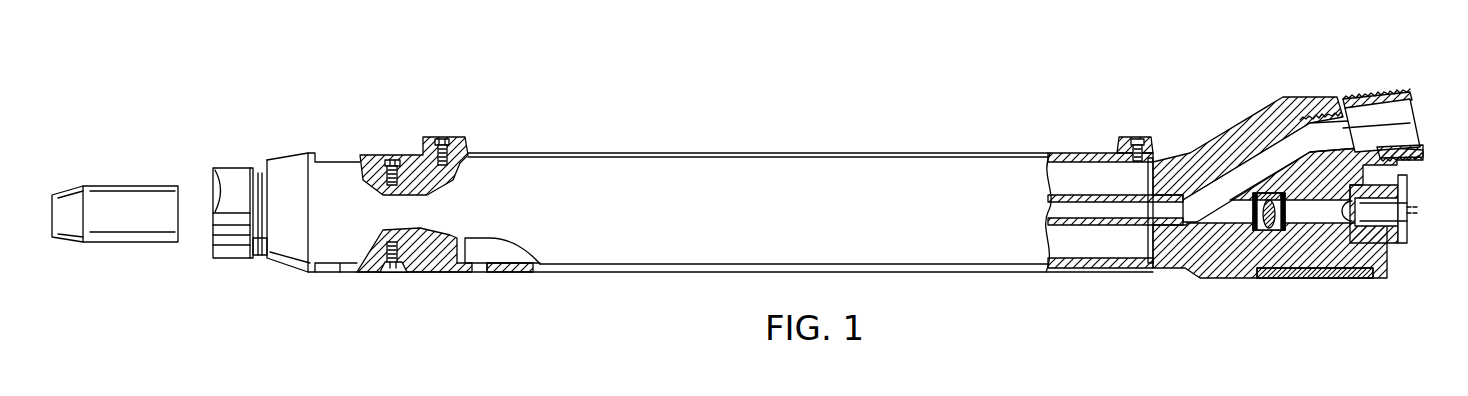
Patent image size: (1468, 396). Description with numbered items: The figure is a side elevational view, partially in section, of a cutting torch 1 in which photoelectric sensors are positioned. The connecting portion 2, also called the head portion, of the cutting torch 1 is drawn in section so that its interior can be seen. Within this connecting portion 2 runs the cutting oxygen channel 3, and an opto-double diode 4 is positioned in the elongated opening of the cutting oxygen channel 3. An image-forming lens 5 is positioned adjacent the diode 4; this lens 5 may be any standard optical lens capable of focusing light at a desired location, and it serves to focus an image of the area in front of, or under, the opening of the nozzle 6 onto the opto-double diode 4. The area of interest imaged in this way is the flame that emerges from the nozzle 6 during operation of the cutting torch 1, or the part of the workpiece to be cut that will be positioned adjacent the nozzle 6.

The cutting torch 1 is at (700, 252).
The connecting portion 2 is at (1340, 257).
The cutting oxygen channel 3 is at (1095, 210).
The opto-double diode 4 is at (1397, 185).
The image-forming lens 5 is at (1273, 227).
The nozzle 6 is at (128, 230).